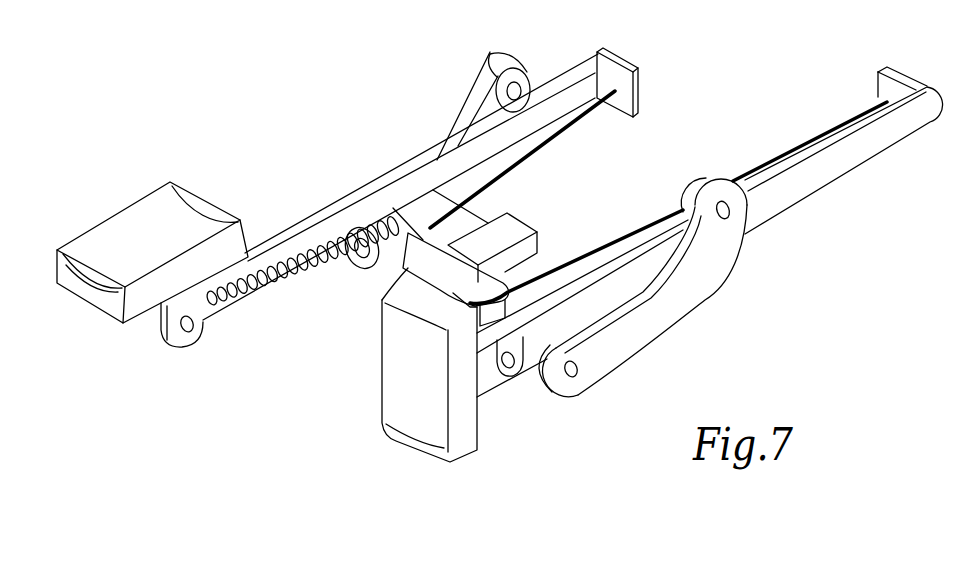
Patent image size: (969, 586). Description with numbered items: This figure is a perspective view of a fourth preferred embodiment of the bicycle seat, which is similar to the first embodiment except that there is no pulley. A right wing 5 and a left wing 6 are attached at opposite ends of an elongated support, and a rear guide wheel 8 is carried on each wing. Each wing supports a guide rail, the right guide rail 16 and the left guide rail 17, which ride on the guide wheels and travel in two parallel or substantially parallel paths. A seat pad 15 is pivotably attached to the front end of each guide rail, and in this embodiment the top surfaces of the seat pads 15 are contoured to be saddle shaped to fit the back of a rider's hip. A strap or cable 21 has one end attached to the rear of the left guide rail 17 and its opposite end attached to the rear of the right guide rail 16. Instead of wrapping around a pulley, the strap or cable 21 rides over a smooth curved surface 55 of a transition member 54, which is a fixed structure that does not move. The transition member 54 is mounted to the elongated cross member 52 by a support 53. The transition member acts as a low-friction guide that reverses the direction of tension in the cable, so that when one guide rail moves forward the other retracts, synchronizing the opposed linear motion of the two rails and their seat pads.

The right wing 5 is at (460, 90).
The left wing 6 is at (700, 303).
The rear guide wheel 8 is at (493, 52).
The seat pad 15 is at (137, 200).
The right guide rail 16 is at (297, 225).
The left guide rail 17 is at (838, 182).
The strap or cable 21 is at (543, 143).
The elongated cross member 52 is at (430, 207).
The support 53 is at (512, 225).
The transition member 54 is at (420, 252).
The smooth curved surface 55 is at (491, 312).